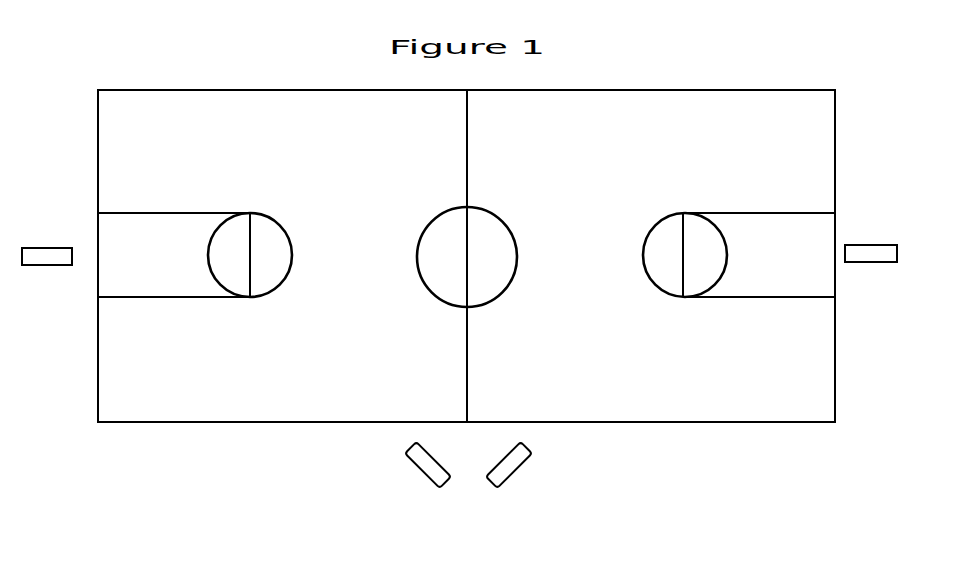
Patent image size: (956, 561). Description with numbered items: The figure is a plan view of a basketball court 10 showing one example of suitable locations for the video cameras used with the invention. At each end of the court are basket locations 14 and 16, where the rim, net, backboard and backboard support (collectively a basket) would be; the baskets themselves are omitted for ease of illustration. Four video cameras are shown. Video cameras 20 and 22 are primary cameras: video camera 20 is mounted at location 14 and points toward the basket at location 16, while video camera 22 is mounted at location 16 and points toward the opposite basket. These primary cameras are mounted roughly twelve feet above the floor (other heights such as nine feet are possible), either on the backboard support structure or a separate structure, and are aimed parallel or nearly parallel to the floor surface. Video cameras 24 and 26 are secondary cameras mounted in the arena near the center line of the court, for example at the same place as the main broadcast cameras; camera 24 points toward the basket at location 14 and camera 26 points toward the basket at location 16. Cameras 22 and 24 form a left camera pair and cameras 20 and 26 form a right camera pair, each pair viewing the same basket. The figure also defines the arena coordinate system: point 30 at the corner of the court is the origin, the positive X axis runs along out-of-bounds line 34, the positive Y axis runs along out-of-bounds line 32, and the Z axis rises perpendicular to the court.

The basketball court 10 is at (466, 232).
The basket location 14 is at (76, 275).
The basket location 16 is at (859, 288).
The video camera 20 is at (56, 222).
The video camera 22 is at (882, 245).
The video camera 24 is at (402, 488).
The video camera 26 is at (535, 488).
The point 30 is at (85, 422).
The out-of-bounds line 32 is at (86, 109).
The out-of-bounds lines 34 is at (310, 449).